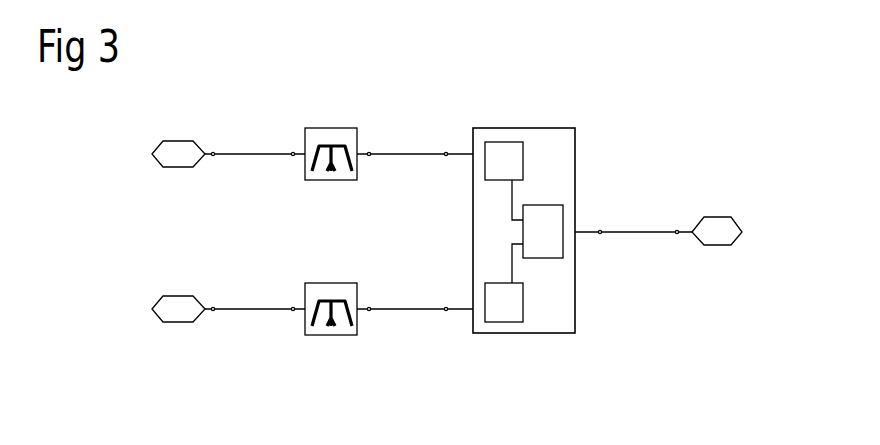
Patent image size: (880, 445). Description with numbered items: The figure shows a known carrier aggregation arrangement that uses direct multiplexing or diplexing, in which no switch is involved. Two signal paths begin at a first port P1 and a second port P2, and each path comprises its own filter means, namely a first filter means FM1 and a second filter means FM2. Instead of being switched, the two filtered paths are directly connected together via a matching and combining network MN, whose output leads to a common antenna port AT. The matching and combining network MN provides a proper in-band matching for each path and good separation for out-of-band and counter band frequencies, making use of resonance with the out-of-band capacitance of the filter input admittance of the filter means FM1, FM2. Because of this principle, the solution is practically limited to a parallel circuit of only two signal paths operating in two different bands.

The first port (Port B2) P1 is at (152, 309).
The second port (Port B1) P2 is at (152, 154).
The filter means FM1 is at (345, 315).
The filter means FM2 is at (319, 128).
The matching and combining network MN is at (538, 312).
The antenna port (Port ANT) AT is at (720, 217).